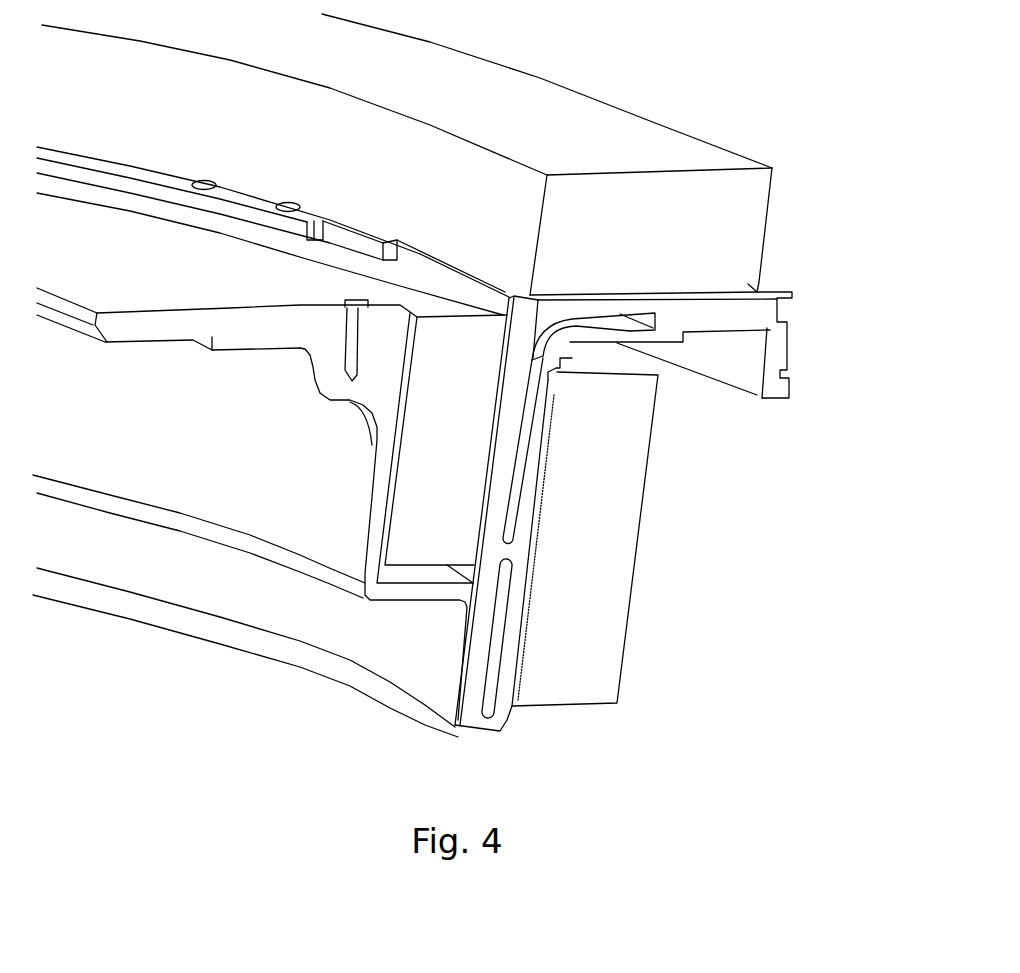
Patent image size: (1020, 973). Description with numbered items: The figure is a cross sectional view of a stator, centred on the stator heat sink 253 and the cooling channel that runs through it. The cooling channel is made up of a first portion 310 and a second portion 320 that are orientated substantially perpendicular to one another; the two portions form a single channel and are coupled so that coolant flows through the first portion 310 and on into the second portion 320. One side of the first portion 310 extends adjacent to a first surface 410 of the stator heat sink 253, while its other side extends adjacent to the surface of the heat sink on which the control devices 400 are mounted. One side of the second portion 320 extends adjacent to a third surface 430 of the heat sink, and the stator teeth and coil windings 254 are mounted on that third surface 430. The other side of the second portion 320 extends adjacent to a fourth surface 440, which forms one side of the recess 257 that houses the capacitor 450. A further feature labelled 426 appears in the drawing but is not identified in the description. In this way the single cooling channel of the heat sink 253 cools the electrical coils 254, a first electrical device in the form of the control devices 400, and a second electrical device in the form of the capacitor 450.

The stator heat sink 253 is at (715, 337).
The stator teeth and coil windings 254 is at (628, 532).
The recess 257 is at (245, 662).
The first portion 310 is at (699, 391).
The second portion 320 is at (534, 673).
The control devices 400 is at (448, 154).
The first surface 410 is at (616, 422).
The chamfer edge 426 is at (806, 255).
The third surface 430 is at (550, 735).
The fourth surface 440 is at (510, 366).
The capacitor 450 is at (272, 508).